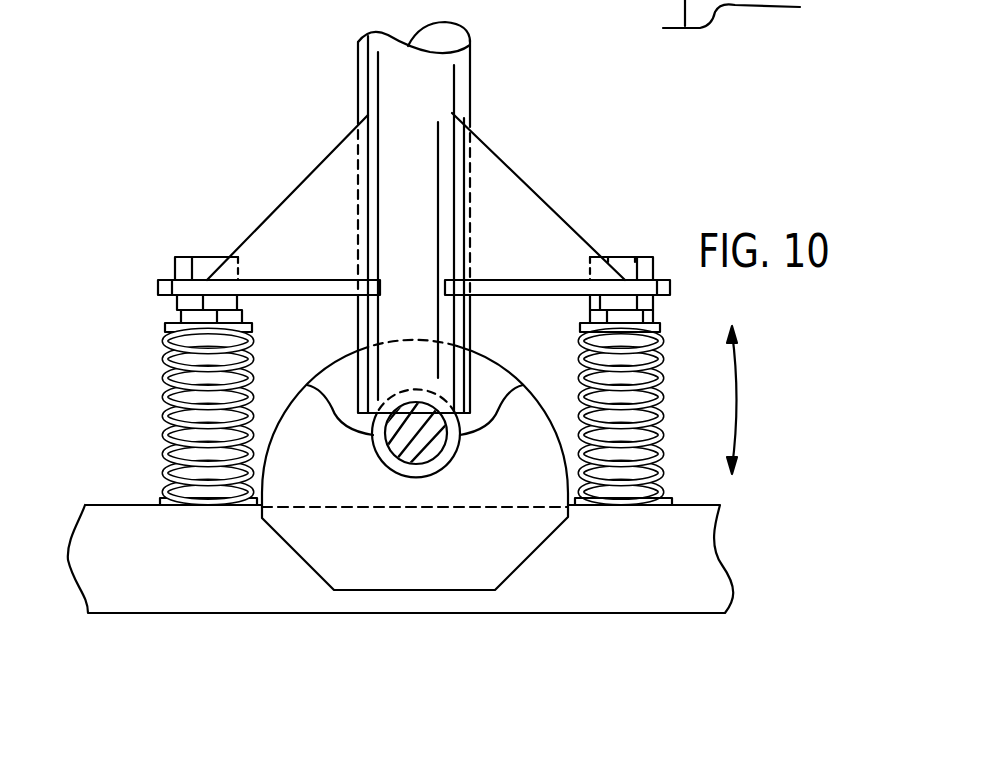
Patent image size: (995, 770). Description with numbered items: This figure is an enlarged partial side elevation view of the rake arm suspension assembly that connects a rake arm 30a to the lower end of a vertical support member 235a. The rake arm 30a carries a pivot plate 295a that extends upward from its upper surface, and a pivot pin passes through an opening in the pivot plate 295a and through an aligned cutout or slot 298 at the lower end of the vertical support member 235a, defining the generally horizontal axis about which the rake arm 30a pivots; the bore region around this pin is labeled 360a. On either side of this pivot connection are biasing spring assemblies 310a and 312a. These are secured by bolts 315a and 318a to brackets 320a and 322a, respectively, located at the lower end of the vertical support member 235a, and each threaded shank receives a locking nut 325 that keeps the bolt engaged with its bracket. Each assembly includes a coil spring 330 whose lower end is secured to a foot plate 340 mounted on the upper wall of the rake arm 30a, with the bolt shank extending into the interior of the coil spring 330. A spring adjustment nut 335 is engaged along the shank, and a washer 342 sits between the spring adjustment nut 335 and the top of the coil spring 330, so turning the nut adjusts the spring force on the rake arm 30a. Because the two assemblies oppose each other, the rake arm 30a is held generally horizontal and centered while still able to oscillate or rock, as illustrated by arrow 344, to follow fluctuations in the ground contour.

The rake arm 30a is at (708, 506).
The vertical support member 235a is at (468, 73).
The pivot plate 295a is at (515, 578).
The cutout or slot 298 is at (433, 417).
The biasing spring assembly 310a is at (723, 164).
The biasing spring assembly 312a is at (174, 194).
The bolt 315a is at (647, 258).
The bolt 318a is at (182, 258).
The bracket 320a is at (540, 280).
The bracket 322a is at (297, 280).
The locking nut 325 is at (657, 307).
The coil spring 330 is at (661, 405).
The spring adjustment nut 335 is at (587, 322).
The foot plate 340 is at (673, 500).
The washer 342 is at (583, 325).
The arrow 344 is at (735, 392).
The bore 360a is at (382, 456).